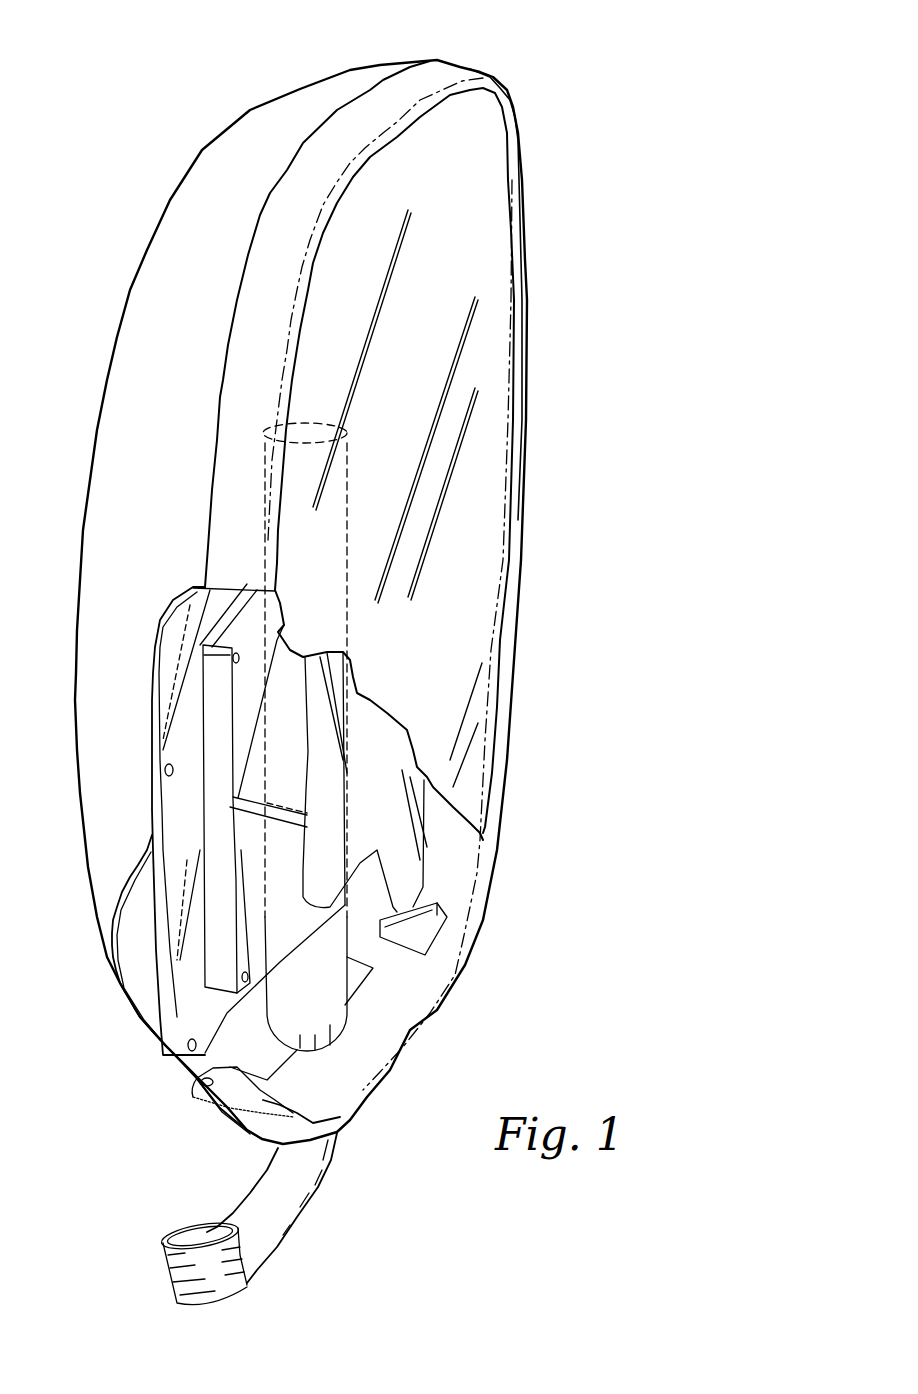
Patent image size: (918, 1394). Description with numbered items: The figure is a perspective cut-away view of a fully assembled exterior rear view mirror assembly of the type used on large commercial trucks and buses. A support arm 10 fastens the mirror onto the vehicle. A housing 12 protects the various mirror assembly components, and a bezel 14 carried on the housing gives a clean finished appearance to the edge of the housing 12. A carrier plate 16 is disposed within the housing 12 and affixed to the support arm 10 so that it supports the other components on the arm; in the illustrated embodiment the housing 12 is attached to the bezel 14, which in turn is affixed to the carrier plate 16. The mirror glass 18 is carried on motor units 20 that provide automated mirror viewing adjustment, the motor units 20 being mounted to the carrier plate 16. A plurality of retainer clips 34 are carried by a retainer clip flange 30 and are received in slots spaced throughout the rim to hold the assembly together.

The support arm 10 is at (303, 1190).
The housing 12 is at (354, 62).
The bezel 14 is at (483, 56).
The carrier plate 16 is at (160, 967).
The mirror glass 18 is at (487, 467).
The motor units 20 is at (255, 843).
The retainer clip flange 30 is at (410, 1005).
The retainer clips 34 is at (443, 910).